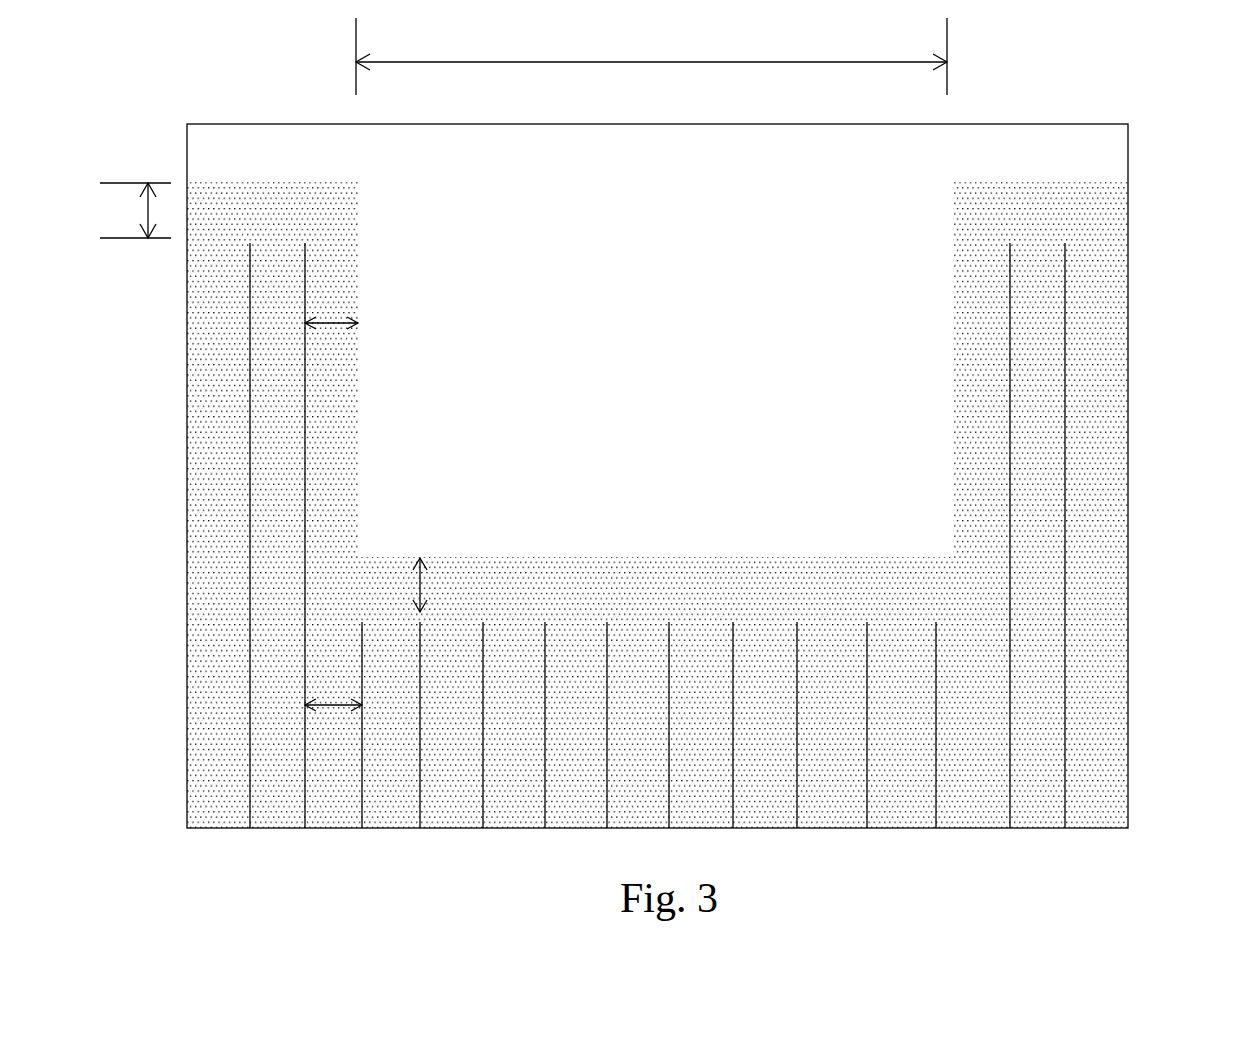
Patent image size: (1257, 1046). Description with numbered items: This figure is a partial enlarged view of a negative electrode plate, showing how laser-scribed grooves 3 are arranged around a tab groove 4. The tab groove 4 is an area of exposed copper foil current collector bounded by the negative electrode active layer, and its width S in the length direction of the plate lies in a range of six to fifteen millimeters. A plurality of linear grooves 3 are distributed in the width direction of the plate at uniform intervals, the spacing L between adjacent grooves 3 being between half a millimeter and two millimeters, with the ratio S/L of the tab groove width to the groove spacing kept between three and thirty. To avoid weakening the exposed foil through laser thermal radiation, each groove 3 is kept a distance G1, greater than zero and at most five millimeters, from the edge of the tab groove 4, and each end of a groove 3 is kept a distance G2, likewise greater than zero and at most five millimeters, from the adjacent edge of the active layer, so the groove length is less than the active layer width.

The groove 3 is at (1065, 288).
The tab groove 4 is at (863, 352).
The width of the tab groove S is at (651, 52).
The distance between the groove and an edge of the tab groove G1 is at (331, 303).
The distance between an end of the groove and an edge of the negative electrode acti G2 is at (273, 397).
The spacing between adjacent grooves L is at (333, 692).